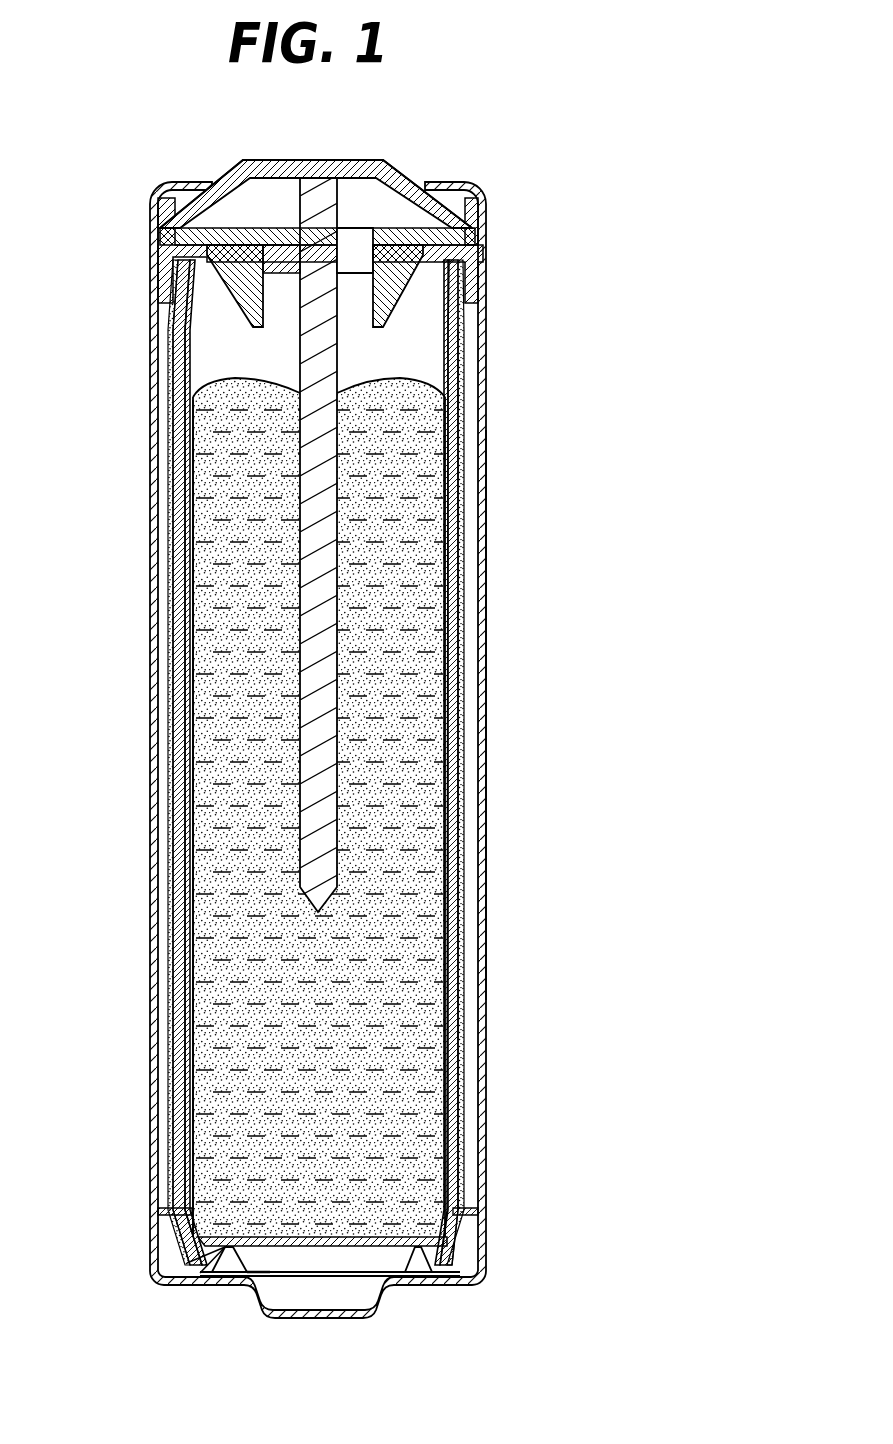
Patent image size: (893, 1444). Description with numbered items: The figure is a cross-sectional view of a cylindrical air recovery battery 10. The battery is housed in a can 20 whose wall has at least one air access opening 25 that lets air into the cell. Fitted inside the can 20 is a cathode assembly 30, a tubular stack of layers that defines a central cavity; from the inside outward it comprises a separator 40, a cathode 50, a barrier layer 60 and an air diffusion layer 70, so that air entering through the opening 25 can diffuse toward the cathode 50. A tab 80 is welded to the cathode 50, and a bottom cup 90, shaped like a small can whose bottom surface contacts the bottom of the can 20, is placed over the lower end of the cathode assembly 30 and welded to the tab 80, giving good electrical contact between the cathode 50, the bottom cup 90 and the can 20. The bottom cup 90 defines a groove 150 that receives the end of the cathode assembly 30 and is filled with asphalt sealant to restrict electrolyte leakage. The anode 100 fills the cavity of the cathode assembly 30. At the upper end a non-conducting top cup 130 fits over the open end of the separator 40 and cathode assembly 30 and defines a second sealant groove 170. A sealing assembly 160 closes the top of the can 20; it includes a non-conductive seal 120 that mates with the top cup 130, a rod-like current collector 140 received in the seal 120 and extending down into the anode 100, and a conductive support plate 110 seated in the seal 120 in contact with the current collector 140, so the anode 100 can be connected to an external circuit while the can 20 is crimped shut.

The cylindrical air recovery battery 10 is at (526, 138).
The can 20 is at (487, 465).
The air access opening 25 is at (487, 599).
The cathode assembly 30 is at (460, 762).
The separator 40 is at (193, 912).
The cathode 50 is at (183, 670).
The barrier layer 60 is at (172, 512).
The air diffusion layer 70 is at (168, 360).
The tab 80 is at (188, 1247).
The bottom cup 90 is at (470, 1244).
The anode 100 is at (385, 1060).
The support plate 110 is at (400, 175).
The seal 120 is at (352, 238).
The top cup 130 is at (395, 300).
The current collector 140 is at (308, 200).
The groove 150 is at (466, 1262).
The sealing assembly 160 is at (126, 160).
The groove 170 is at (424, 266).